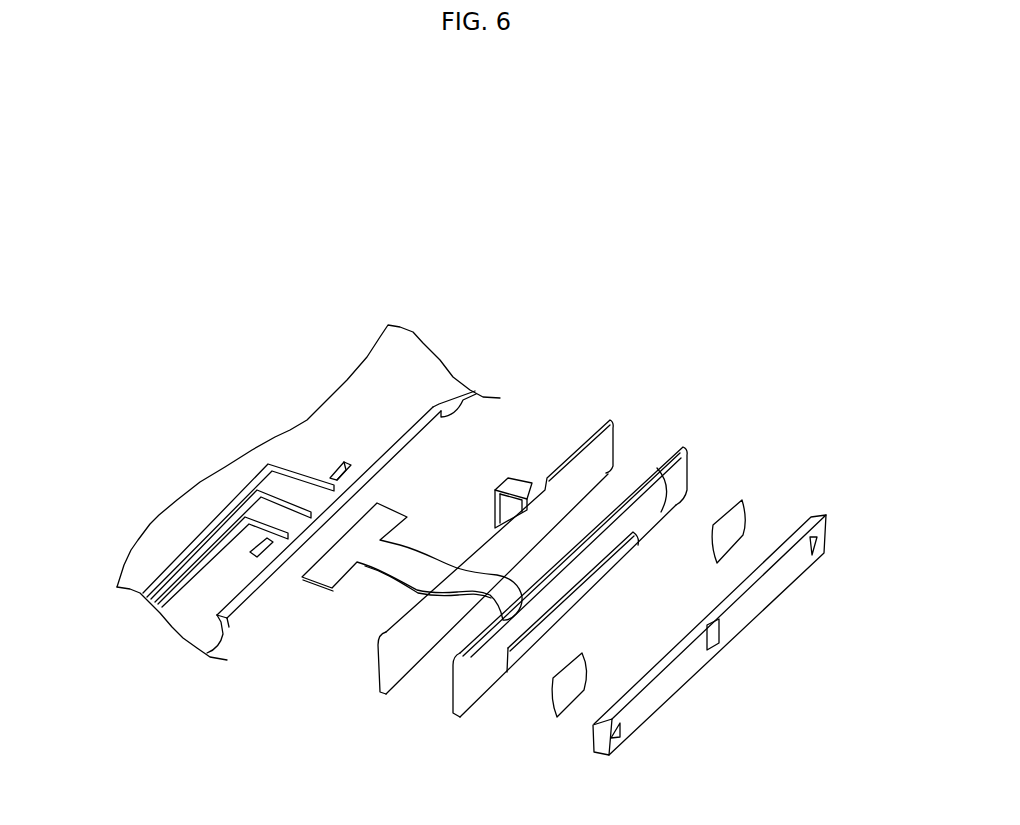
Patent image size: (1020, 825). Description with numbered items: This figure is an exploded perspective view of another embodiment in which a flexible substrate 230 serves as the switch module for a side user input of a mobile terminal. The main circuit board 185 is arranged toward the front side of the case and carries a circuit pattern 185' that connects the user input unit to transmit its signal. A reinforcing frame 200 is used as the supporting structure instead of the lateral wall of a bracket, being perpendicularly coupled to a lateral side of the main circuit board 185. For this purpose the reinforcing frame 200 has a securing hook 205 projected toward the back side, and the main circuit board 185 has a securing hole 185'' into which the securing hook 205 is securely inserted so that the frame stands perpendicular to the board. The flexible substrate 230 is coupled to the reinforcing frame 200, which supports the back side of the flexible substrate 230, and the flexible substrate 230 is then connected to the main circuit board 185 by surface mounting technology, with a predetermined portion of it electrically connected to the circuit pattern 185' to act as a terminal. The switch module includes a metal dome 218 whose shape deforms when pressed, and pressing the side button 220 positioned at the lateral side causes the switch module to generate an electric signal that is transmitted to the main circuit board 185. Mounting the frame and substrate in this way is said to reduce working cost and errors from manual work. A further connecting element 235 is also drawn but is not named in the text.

The main circuit board 185 is at (308, 492).
The circuit pattern 185' is at (238, 496).
The securing hole 185'' is at (321, 416).
The reinforcing frame 200 is at (607, 440).
The securing hook 205 is at (510, 487).
The metal dome 218 is at (743, 510).
The side button 220 is at (810, 518).
The flexible substrate 230 is at (687, 474).
The connection clip 235 is at (437, 574).